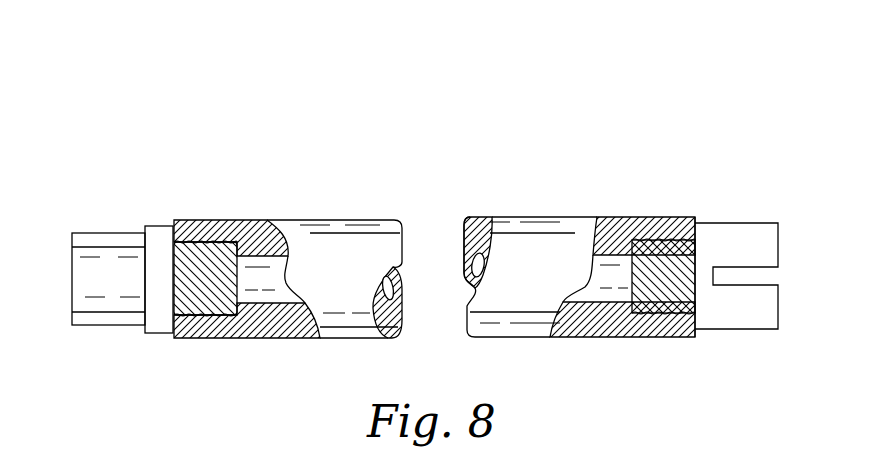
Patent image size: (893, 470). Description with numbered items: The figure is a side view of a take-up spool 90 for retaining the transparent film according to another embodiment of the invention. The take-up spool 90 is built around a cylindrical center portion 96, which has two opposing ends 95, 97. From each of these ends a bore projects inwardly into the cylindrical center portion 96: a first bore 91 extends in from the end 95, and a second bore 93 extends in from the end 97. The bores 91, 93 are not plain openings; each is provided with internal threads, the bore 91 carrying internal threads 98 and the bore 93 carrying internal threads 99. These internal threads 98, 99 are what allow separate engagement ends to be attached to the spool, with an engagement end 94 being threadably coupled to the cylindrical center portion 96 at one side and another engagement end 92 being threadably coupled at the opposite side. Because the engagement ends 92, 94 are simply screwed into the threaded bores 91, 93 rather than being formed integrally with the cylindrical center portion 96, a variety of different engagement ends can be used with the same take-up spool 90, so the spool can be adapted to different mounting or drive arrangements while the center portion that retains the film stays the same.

The take-up spool 90 is at (512, 138).
The bore 91 is at (211, 250).
The engagement end 92 is at (723, 322).
The bore 93 is at (663, 218).
The engagement end 94 is at (160, 237).
The end 95 is at (172, 337).
The cylindrical center portion 96 is at (302, 220).
The end 97 is at (697, 218).
The internal threads 98 is at (207, 317).
The internal threads 99 is at (647, 337).